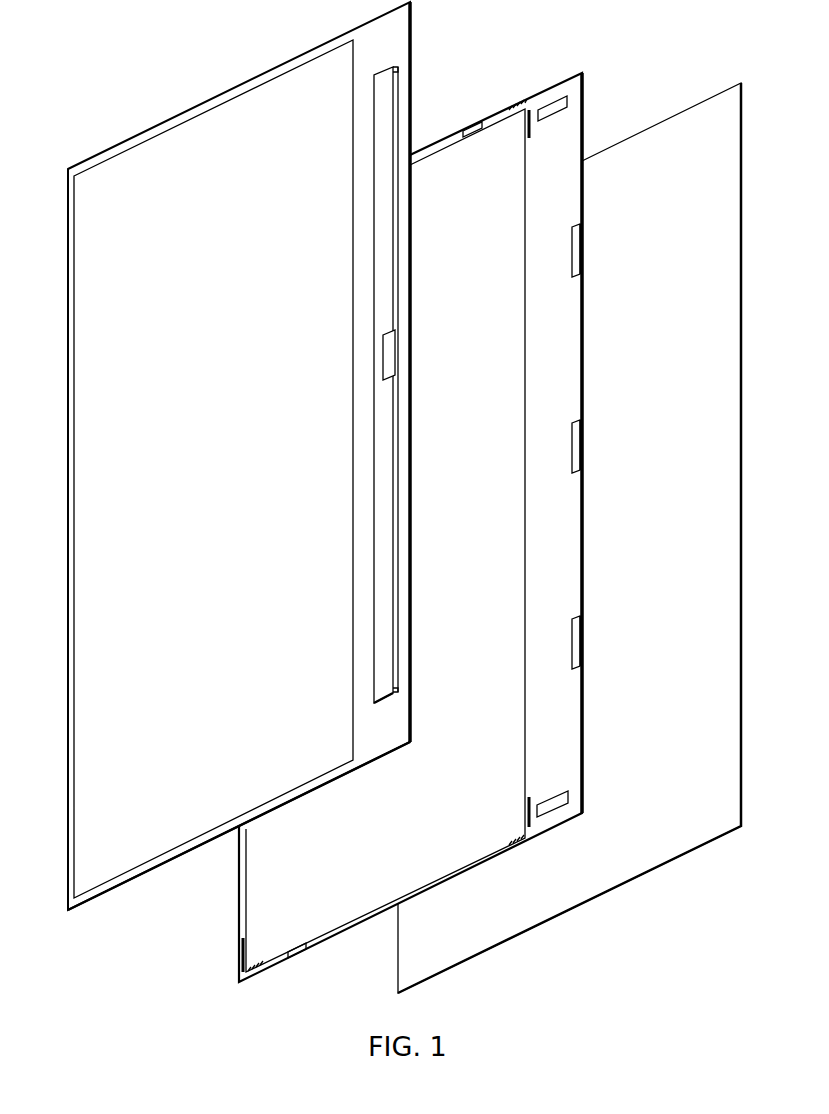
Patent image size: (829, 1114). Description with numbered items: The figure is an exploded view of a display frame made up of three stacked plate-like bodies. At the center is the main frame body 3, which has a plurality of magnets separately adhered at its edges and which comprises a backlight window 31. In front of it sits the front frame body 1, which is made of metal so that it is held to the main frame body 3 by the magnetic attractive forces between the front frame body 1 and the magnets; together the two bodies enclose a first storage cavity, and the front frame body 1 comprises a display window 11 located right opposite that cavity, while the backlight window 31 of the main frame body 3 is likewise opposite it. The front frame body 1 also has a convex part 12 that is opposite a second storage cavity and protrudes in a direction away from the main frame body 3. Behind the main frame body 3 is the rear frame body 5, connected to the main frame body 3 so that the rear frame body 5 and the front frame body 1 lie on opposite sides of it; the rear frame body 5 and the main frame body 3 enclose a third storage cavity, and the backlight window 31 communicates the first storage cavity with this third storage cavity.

The front frame body 1 is at (239, 456).
The display window 11 is at (190, 158).
The convex part 12 is at (386, 105).
The main frame body 3 is at (410, 507).
The backlight window 31 is at (447, 185).
The rear frame body 5 is at (690, 175).